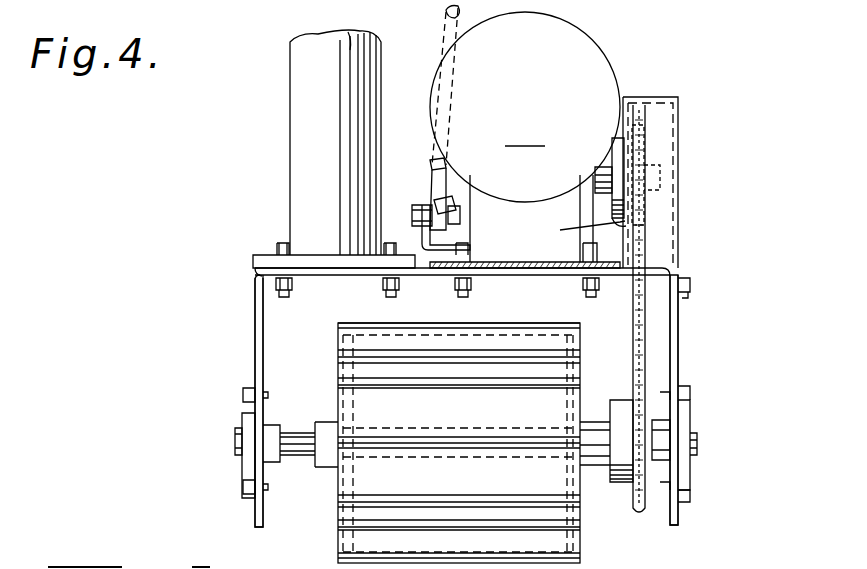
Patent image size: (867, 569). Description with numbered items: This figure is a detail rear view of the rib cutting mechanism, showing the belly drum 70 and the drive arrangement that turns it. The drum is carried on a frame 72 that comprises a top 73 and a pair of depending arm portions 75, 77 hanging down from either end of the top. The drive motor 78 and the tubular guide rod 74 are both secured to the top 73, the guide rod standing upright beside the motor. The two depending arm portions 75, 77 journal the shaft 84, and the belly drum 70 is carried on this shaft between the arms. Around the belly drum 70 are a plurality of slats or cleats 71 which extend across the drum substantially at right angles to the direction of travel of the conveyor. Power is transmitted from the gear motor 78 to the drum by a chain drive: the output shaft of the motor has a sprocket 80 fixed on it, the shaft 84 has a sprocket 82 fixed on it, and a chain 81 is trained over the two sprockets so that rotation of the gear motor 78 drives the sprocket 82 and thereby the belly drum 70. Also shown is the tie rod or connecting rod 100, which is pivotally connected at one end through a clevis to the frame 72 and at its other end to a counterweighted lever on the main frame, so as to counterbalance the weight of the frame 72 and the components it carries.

The belly drum 70 is at (365, 474).
The slats or cleats 71 is at (338, 325).
The frame 72 is at (241, 274).
The top 73 is at (402, 272).
The tubular guide rod 74 is at (300, 128).
The depending arm portion 75 is at (255, 335).
The depending arm portion 77 is at (678, 358).
The drive motor 78 is at (528, 137).
The sprocket 80 is at (632, 218).
The chain 81 is at (645, 322).
The sprocket 82 is at (620, 400).
The shaft 84 is at (297, 462).
The tie rod or connecting rod 100 is at (446, 23).